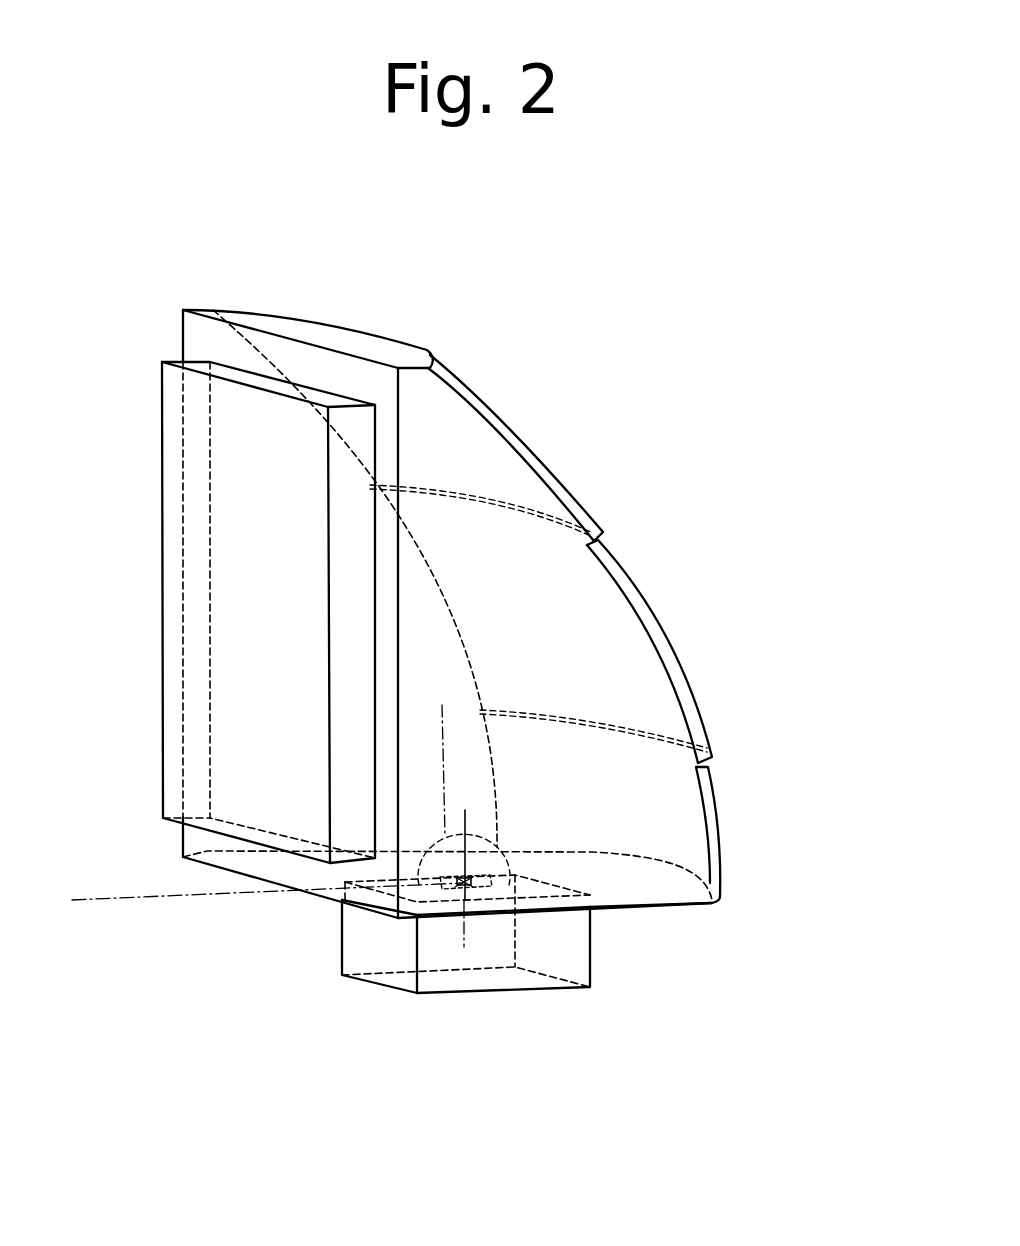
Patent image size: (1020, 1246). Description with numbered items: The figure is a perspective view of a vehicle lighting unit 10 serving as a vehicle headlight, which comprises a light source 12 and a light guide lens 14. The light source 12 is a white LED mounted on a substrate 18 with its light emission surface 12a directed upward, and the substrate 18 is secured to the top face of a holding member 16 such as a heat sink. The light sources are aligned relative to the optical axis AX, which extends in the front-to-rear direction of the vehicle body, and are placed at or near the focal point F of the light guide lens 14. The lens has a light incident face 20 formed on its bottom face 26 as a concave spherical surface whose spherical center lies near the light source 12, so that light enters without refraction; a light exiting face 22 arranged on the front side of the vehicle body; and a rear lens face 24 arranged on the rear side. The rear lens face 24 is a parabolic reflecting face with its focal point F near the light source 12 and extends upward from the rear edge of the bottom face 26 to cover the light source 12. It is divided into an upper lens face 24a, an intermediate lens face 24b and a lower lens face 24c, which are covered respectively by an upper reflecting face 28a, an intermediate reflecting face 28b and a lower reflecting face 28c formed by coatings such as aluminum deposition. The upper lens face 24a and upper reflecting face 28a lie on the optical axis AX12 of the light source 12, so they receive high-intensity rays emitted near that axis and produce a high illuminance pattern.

The vehicle lighting unit 10 is at (352, 248).
The light source 12 is at (468, 877).
The light emission surface 12a is at (465, 853).
The light guide lens 14 is at (370, 328).
The holding member 16 is at (382, 962).
The substrate 18 is at (469, 882).
The light incident face 20 is at (457, 842).
The light exiting face 22 is at (220, 590).
The rear lens face 24 is at (800, 467).
The upper lens face 24a is at (495, 462).
The intermediate lens face 24b is at (567, 583).
The lower lens face 24c is at (667, 788).
The bottom face 26 is at (640, 910).
The upper reflecting face 28a is at (488, 407).
The intermediate reflecting face 28b is at (651, 615).
The lower reflecting face 28c is at (713, 824).
The optical axis AX is at (93, 900).
The optical axis of the light source AX12 is at (438, 811).
The focal point F is at (465, 881).